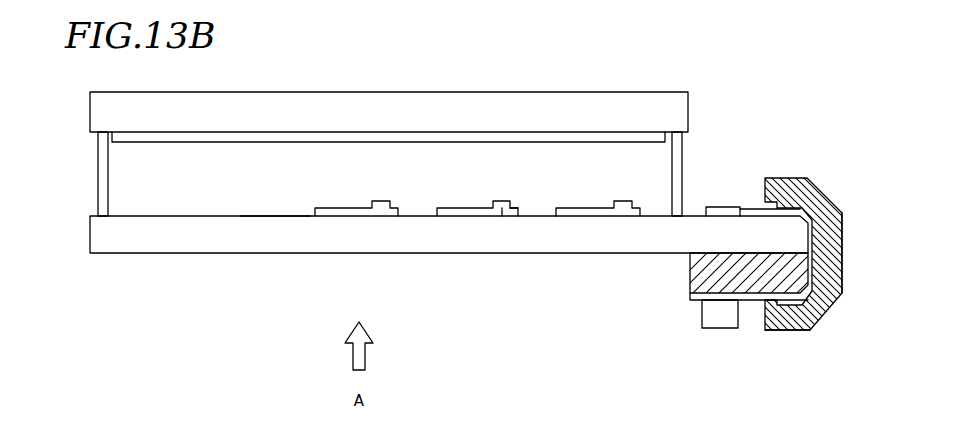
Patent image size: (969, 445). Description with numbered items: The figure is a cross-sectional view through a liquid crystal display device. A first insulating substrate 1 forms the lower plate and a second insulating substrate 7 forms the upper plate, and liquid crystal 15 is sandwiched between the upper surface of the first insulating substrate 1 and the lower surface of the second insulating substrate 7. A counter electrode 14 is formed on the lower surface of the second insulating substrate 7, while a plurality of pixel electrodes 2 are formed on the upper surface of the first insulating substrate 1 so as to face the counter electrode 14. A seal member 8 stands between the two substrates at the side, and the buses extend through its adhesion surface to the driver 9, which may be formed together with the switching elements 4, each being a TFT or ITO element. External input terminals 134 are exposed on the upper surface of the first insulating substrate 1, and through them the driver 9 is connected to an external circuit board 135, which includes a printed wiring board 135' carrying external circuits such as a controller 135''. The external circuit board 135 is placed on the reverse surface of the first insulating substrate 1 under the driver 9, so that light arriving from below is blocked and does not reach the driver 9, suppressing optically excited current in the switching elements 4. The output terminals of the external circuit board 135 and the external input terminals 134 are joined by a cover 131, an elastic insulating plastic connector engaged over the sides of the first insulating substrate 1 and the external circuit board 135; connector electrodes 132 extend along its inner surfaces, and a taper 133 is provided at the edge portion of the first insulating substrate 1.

The second insulating substrate 7 is at (430, 105).
The counter electrode 14 is at (545, 137).
The seal member 8 is at (98, 207).
The liquid crystal 15 is at (278, 200).
The first insulating substrate 1 is at (405, 242).
The pixel electrodes 2 is at (473, 216).
The switching element 4 is at (510, 216).
The driver 9 is at (727, 207).
The external input terminals 134 is at (755, 209).
The taper 133 is at (817, 190).
The connector electrodes 132 is at (827, 265).
The cover 131 is at (785, 323).
The external circuit board 135 is at (751, 288).
The printed wiring board 135' is at (702, 337).
The controller 135'' is at (715, 353).